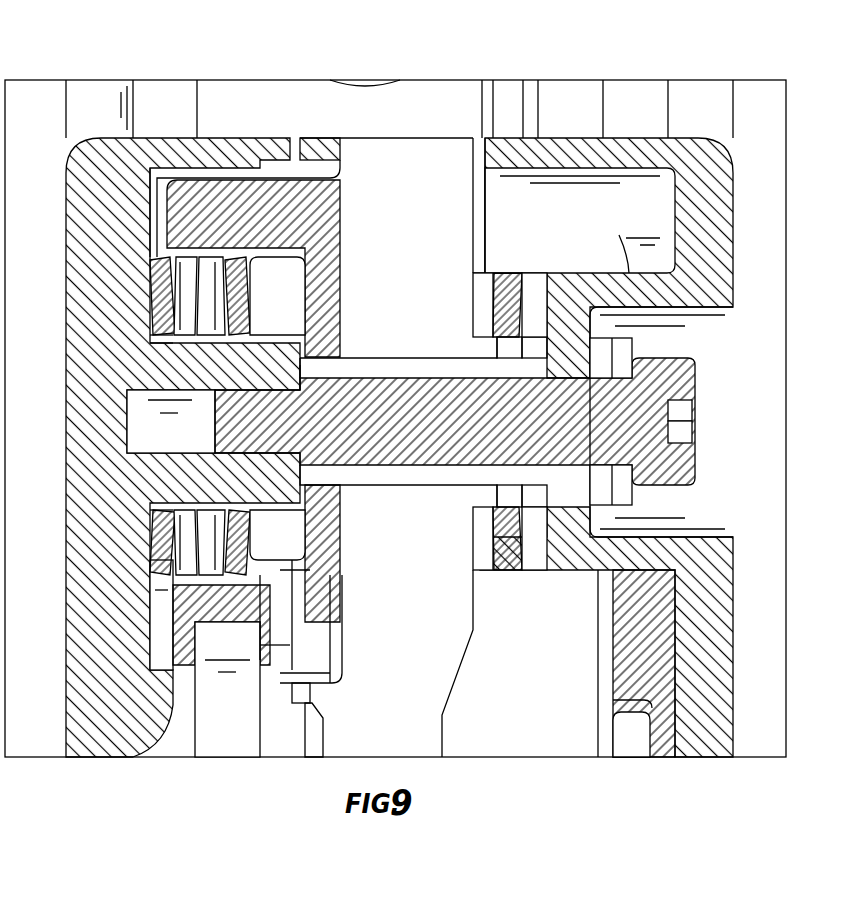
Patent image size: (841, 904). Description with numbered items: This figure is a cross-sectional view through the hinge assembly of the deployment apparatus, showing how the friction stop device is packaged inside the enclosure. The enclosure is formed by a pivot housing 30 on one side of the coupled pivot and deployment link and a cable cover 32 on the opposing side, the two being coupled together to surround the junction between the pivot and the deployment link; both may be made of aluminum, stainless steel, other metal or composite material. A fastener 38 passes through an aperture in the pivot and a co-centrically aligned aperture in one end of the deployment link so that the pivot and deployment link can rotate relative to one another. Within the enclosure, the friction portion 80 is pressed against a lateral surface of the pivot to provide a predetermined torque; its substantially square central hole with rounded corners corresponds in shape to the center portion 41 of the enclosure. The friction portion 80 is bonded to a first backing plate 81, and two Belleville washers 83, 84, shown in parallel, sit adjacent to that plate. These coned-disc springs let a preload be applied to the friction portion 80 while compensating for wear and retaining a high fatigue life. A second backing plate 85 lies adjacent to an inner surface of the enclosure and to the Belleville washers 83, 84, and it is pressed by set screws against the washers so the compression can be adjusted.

The pivot housing 30 is at (86, 342).
The cable cover 32 is at (717, 240).
The fastener 38 is at (653, 385).
The center portion 41 is at (212, 482).
The friction portion 80 is at (266, 280).
The first backing plate 81 is at (243, 290).
The Belleville washer 83 is at (212, 290).
The Belleville washer 84 is at (185, 287).
The second backing plate 85 is at (153, 262).